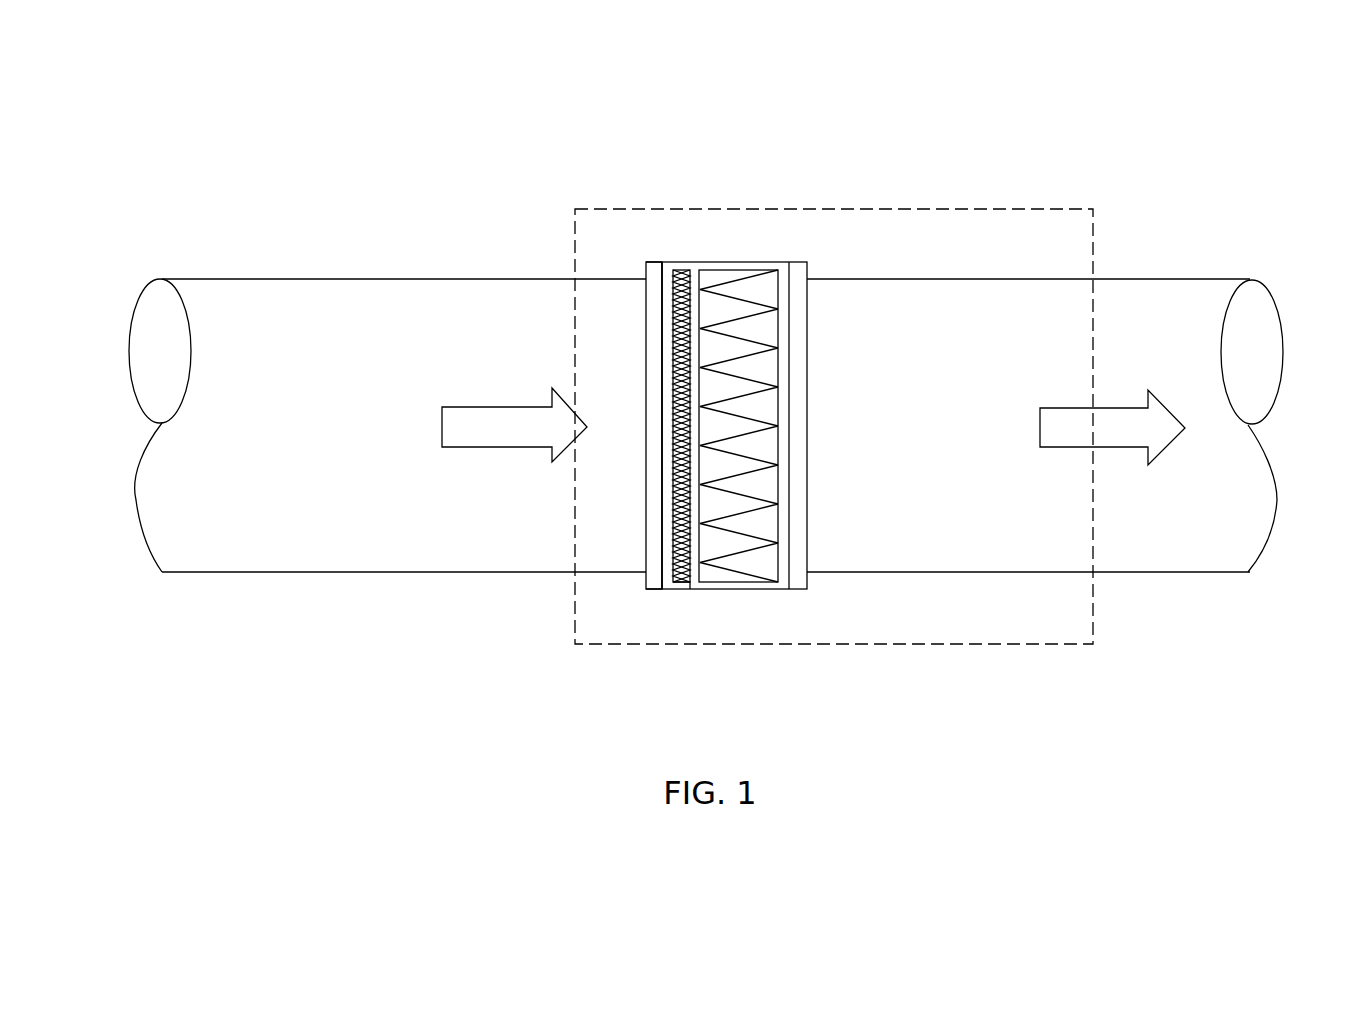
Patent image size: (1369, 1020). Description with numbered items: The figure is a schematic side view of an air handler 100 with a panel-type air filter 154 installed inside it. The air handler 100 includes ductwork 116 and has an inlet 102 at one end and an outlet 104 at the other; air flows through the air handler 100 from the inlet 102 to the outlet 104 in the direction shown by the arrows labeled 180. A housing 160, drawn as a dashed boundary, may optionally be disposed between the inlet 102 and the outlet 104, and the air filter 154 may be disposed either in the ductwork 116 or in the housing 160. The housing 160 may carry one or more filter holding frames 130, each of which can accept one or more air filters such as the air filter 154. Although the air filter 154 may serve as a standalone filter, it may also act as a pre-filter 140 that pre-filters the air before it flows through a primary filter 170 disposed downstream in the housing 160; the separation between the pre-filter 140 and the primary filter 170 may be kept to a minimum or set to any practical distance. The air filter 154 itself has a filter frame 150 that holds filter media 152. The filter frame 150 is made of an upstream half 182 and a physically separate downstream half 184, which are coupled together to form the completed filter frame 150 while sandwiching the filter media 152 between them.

The air handler 100 is at (486, 150).
The inlet 102 is at (155, 382).
The outlet 104 is at (1253, 365).
The ductwork 116 is at (312, 278).
The filter holding frame 130 is at (808, 388).
The pre-filter 140 is at (660, 270).
The filter frame 150 is at (675, 568).
The filter media 152 is at (678, 583).
The air filter 154 is at (667, 589).
The housing 160 is at (880, 209).
The primary filter 170 is at (758, 290).
The arrows 180 is at (490, 427).
The upstream half 182 is at (677, 328).
The downstream half 184 is at (692, 348).